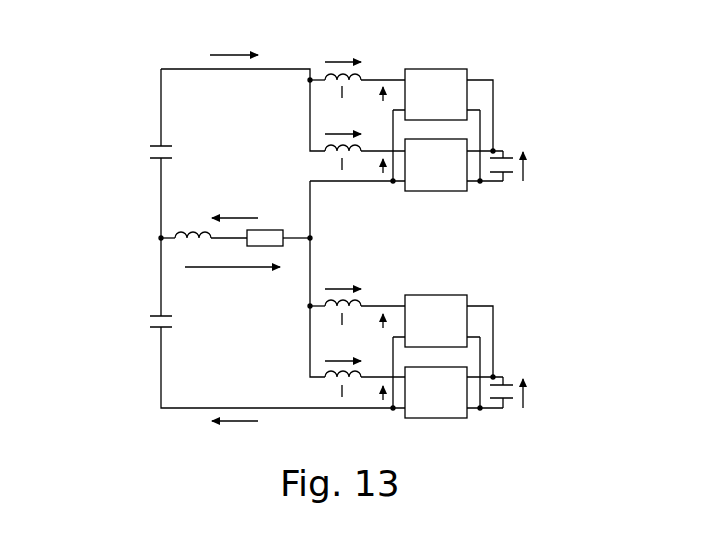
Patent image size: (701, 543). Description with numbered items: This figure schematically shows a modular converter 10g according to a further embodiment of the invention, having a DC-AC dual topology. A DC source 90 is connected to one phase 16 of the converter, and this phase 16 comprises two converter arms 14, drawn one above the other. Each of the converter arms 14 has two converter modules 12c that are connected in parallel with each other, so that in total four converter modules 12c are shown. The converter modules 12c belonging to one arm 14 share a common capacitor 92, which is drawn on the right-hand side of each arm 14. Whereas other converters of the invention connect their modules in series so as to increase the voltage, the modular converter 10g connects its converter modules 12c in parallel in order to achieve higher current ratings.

The modular converter 10g is at (95, 50).
The DC source 90 is at (135, 233).
The phase 16 is at (502, 43).
The converter arm 14 is at (554, 93).
The converter module 12c is at (436, 69).
The common capacitor 92 is at (512, 147).